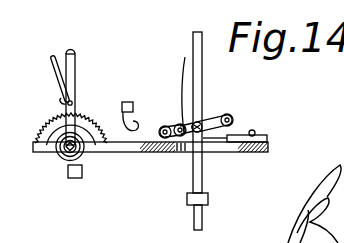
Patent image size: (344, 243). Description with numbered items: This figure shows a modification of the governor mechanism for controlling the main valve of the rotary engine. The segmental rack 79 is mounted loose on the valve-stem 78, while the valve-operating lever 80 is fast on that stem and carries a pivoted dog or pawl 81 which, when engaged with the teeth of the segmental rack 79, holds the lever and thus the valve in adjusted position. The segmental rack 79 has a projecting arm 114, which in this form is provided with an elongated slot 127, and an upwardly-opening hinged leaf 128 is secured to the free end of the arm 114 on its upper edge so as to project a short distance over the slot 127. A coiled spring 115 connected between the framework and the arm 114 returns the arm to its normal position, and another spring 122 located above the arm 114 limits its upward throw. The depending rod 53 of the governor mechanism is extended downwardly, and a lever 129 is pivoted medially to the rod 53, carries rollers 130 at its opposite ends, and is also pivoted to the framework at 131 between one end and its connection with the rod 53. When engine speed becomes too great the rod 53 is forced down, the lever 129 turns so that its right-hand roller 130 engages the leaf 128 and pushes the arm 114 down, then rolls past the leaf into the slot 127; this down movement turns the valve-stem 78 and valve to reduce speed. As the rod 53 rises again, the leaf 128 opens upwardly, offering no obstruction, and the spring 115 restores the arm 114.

The rod 53 is at (203, 77).
The valve-stem 78 is at (60, 158).
The segmental rack 79 is at (50, 121).
The valve-operating lever 80 is at (67, 51).
The dog or pawl 81 is at (53, 63).
The arm 114 is at (127, 150).
The coiled spring 115 is at (57, 156).
The spring 122 is at (150, 96).
The elongated slot 127 is at (230, 153).
The hinged leaf 128 is at (240, 134).
The lever 129 is at (216, 121).
The rollers 130 is at (165, 126).
The pivot 131 is at (185, 60).